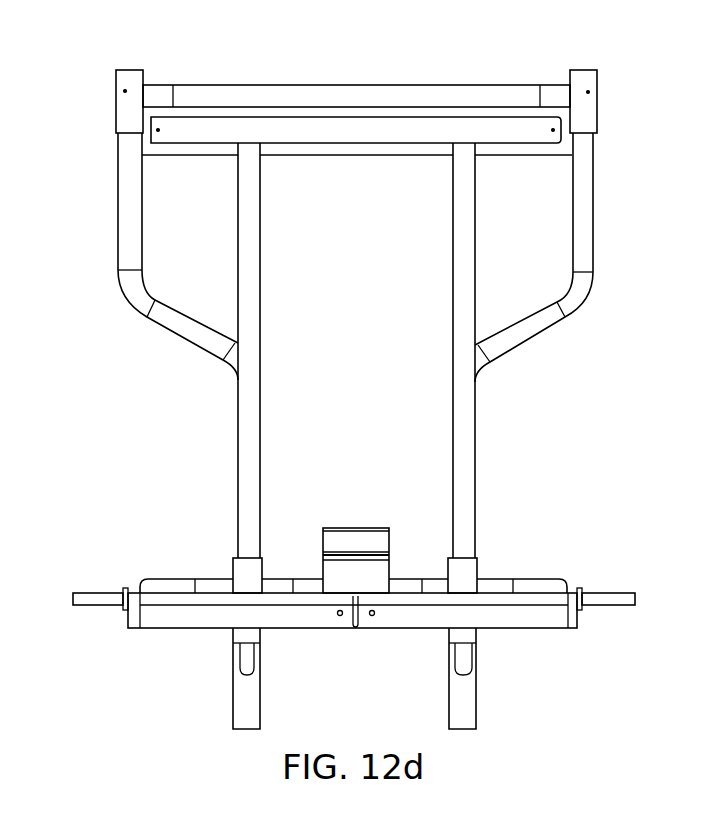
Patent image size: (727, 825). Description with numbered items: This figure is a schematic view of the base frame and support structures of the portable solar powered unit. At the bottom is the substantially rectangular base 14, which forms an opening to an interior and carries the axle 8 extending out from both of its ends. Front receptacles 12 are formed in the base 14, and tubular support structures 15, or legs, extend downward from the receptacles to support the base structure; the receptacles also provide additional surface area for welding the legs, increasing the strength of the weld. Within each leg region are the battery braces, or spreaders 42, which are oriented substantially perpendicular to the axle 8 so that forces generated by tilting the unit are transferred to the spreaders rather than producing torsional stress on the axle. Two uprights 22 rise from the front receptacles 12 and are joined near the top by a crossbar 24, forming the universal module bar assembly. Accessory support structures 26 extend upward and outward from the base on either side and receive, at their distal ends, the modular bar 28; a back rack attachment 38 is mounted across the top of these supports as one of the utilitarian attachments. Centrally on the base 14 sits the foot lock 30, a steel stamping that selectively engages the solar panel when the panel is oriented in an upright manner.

The axle 8 is at (93, 598).
The front receptacles 12 is at (247, 556).
The base 14 is at (130, 515).
The support structures 15 is at (250, 705).
The uprights 22 is at (245, 449).
The crossbar 24 is at (348, 134).
The accessory support structures 26 is at (132, 243).
The modular bar 28 is at (281, 110).
The foot lock 30 is at (362, 540).
The back rack attachment 38 is at (457, 90).
The spreaders 42 is at (240, 658).